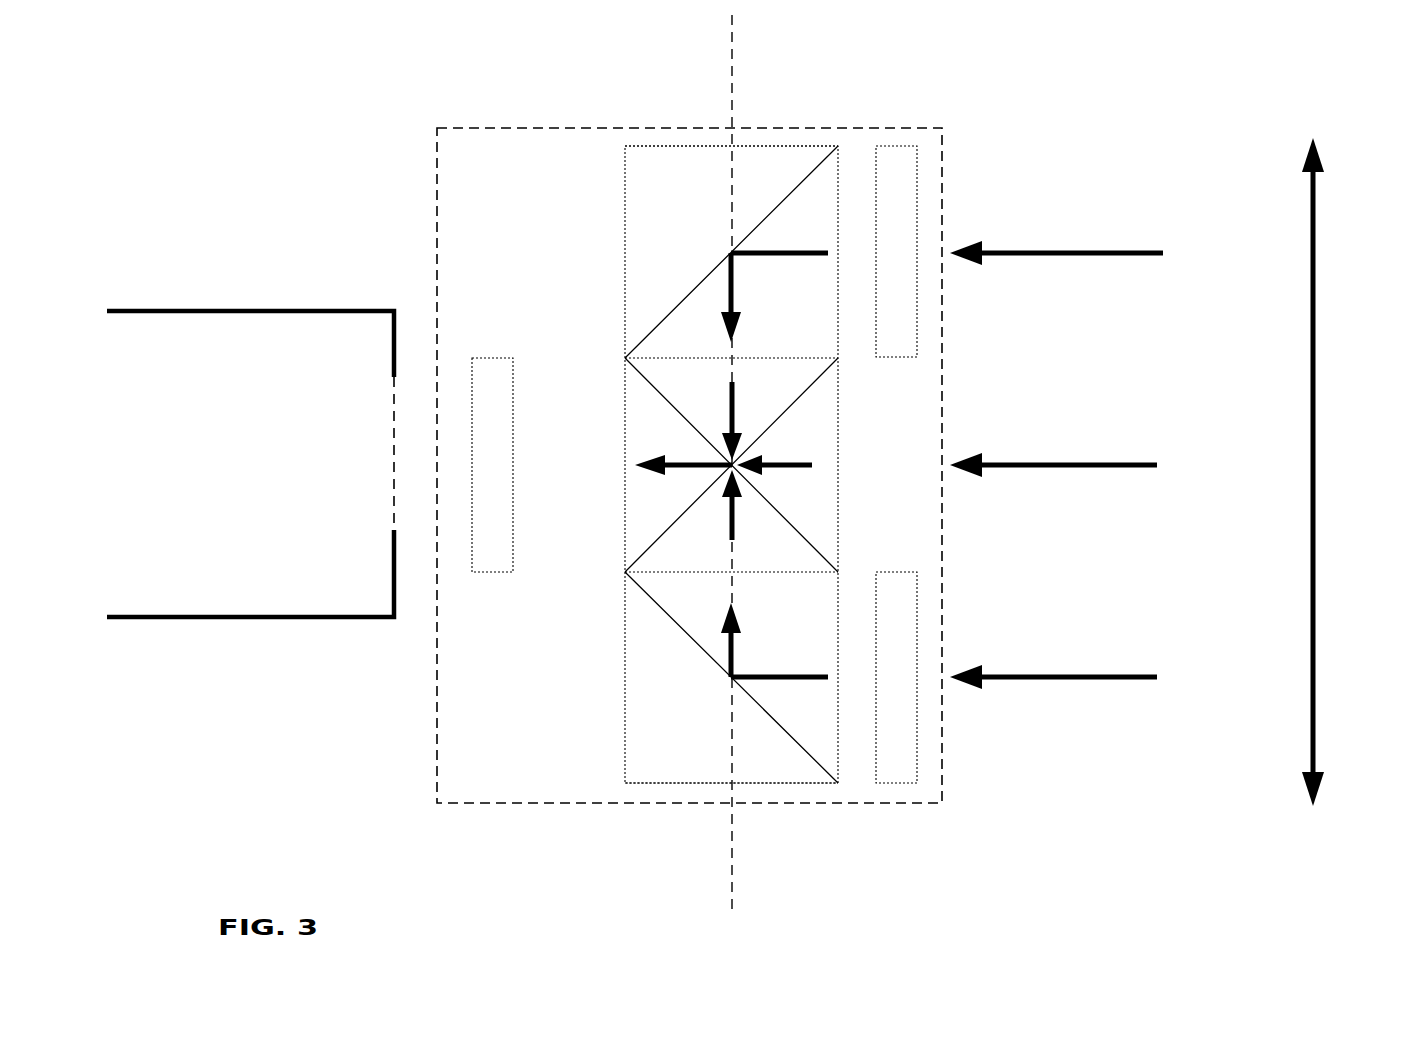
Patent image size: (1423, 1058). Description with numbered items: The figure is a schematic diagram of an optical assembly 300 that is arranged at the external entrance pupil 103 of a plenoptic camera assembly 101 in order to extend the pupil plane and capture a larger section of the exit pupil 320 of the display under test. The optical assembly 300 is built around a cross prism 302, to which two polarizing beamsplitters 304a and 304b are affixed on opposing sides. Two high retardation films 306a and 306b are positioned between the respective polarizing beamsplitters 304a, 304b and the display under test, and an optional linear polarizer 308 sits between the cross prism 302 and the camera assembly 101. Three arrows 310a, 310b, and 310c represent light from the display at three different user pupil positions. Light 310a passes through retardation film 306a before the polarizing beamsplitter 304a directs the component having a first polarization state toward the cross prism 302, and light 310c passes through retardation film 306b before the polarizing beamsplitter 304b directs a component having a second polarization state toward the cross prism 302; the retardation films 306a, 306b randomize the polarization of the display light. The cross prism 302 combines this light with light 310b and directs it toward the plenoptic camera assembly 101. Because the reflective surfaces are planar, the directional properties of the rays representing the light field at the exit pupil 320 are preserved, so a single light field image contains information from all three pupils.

The optical assembly 300 is at (462, 134).
The plenoptic camera assembly 101 is at (312, 311).
The external entrance pupil 103 is at (729, 852).
The cross prism 302 is at (625, 465).
The polarizing beamsplitter 304a is at (782, 146).
The polarizing beamsplitter 304b is at (735, 785).
The high retardation film 306a is at (897, 146).
The high retardation film 306b is at (897, 783).
The linear polarizer 308 is at (492, 358).
The light 310a is at (1075, 250).
The light 310b is at (1075, 462).
The light 310c is at (1075, 674).
The exit pupil 320 is at (1315, 268).